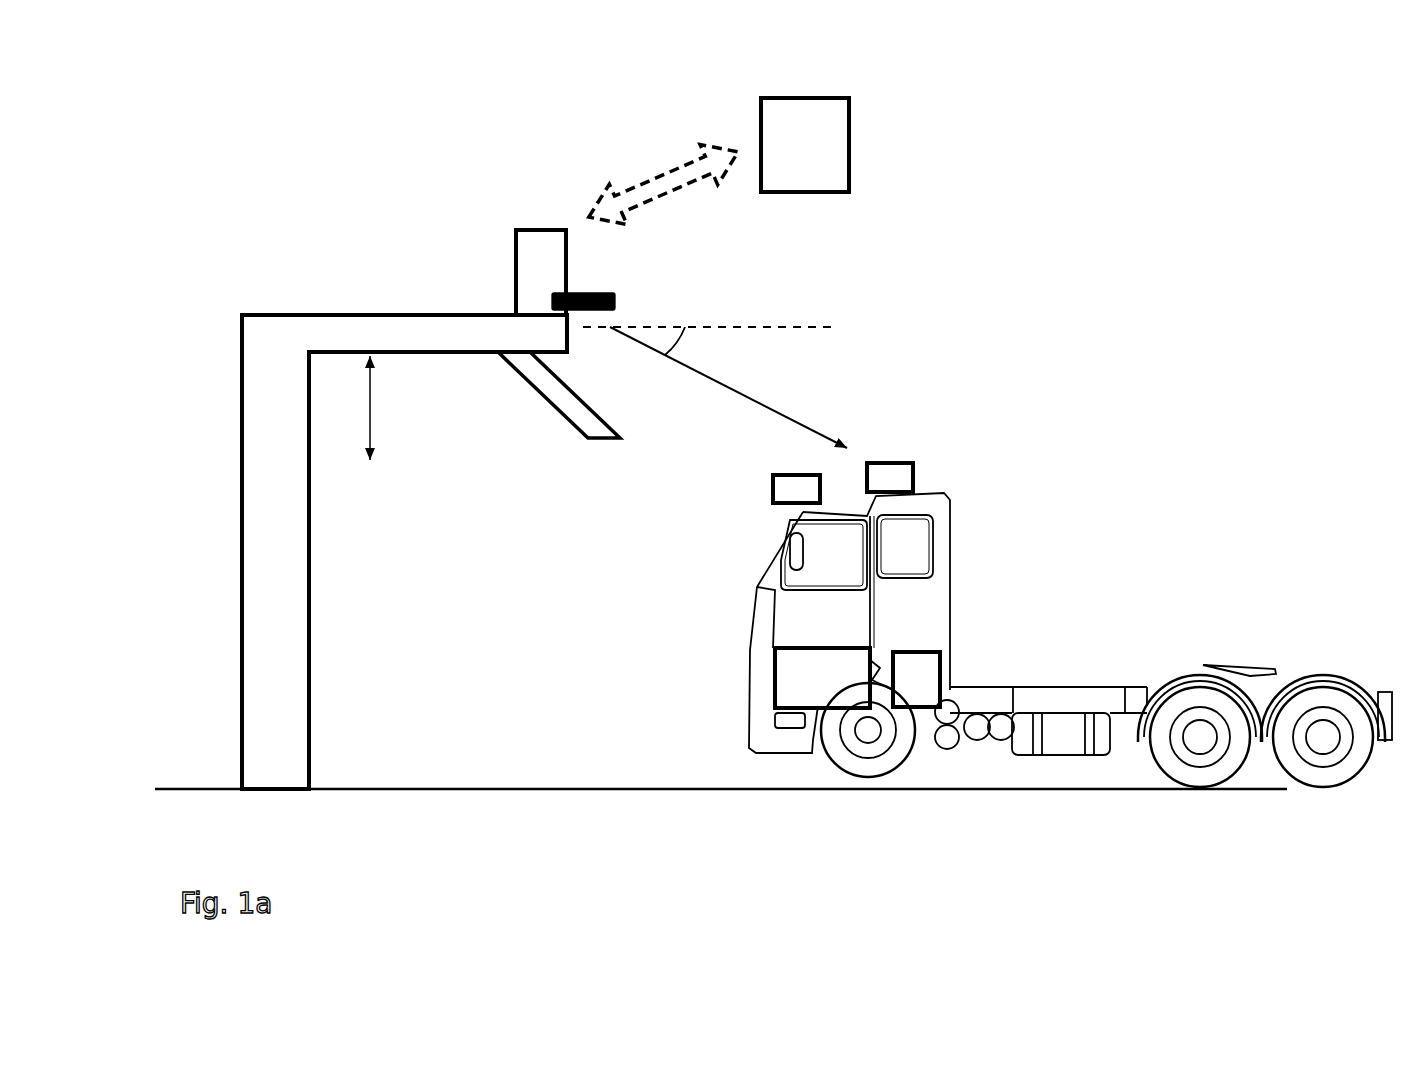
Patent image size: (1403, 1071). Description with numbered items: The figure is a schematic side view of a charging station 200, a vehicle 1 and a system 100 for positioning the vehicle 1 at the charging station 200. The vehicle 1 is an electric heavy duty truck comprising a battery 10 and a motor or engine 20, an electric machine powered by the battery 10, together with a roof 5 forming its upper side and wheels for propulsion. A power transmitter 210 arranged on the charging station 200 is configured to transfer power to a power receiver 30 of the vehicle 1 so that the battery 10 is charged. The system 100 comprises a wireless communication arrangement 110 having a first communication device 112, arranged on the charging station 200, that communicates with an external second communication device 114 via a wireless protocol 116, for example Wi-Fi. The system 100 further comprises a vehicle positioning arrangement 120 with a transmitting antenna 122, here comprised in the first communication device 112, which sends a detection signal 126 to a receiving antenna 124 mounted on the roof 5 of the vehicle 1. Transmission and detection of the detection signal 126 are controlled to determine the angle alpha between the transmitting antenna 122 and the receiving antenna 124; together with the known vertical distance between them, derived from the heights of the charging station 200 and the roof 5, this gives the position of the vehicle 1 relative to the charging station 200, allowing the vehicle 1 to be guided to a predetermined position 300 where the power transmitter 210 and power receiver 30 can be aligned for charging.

The vehicle 1 is at (1029, 547).
The roof 5 is at (932, 485).
The battery 10 is at (940, 655).
The motor or engine 20 is at (805, 700).
The power receiver 30 is at (775, 505).
The system for positioning the vehicle 100 is at (680, 351).
The wireless communication arrangement 110 is at (552, 194).
The first communication device 112 is at (515, 253).
The second communication device 114 is at (849, 150).
The wireless protocol 116 is at (680, 150).
The vehicle positioning arrangement 120 is at (769, 358).
The transmitting antenna 122 is at (615, 302).
The receiving antenna 124 is at (893, 463).
The detection signal 126 is at (720, 388).
The charging station 200 is at (363, 419).
The power transmitter 210 is at (520, 372).
The predetermined position 300 is at (482, 735).